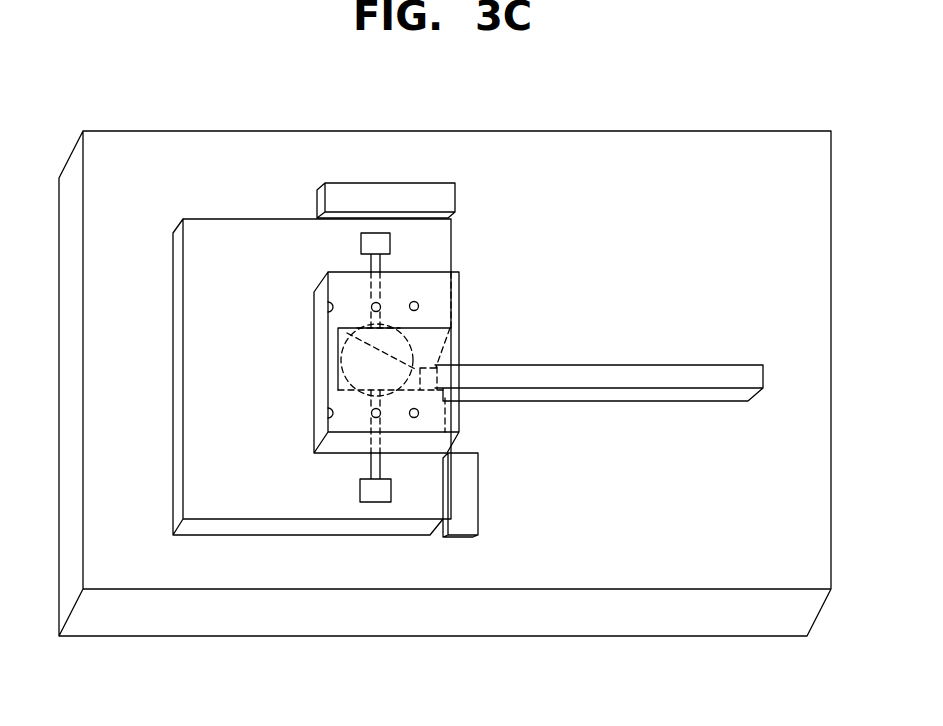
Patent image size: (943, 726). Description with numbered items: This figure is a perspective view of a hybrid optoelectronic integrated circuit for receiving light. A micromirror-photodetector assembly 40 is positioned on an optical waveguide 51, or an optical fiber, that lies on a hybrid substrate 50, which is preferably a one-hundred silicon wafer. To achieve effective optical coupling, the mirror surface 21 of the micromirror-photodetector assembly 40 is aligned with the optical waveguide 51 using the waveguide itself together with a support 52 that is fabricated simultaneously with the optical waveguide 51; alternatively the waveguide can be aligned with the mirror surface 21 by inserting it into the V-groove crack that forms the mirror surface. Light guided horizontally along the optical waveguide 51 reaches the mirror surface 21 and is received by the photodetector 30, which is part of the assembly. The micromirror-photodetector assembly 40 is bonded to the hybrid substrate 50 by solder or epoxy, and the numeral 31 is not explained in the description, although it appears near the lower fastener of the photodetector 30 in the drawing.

The hybrid substrate 50 is at (703, 131).
The micromirror-photodetector assembly 40 is at (185, 221).
The support 52 is at (377, 188).
The photodetector 30 is at (315, 315).
The mirror surface 21 is at (360, 357).
The set screw 31 is at (363, 393).
The optical waveguide 51 is at (614, 365).